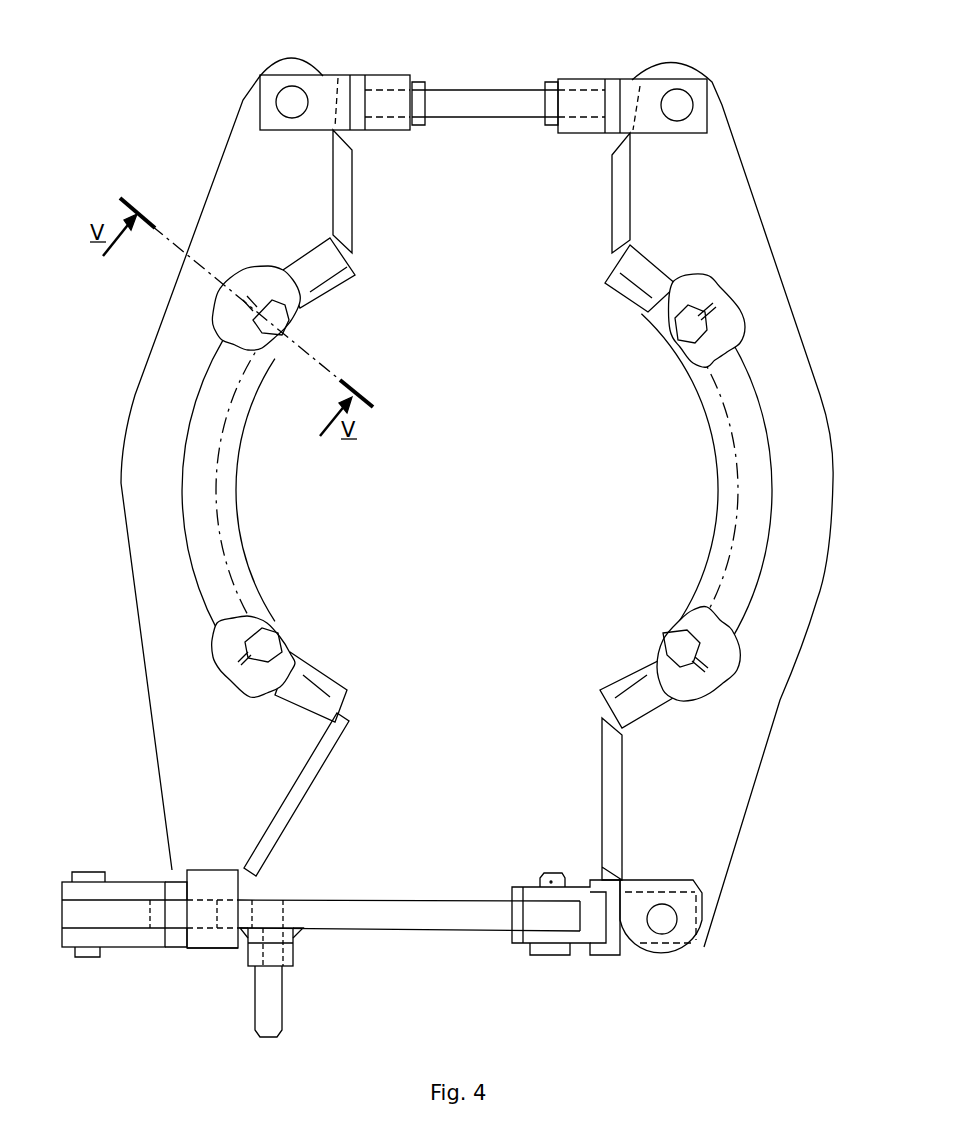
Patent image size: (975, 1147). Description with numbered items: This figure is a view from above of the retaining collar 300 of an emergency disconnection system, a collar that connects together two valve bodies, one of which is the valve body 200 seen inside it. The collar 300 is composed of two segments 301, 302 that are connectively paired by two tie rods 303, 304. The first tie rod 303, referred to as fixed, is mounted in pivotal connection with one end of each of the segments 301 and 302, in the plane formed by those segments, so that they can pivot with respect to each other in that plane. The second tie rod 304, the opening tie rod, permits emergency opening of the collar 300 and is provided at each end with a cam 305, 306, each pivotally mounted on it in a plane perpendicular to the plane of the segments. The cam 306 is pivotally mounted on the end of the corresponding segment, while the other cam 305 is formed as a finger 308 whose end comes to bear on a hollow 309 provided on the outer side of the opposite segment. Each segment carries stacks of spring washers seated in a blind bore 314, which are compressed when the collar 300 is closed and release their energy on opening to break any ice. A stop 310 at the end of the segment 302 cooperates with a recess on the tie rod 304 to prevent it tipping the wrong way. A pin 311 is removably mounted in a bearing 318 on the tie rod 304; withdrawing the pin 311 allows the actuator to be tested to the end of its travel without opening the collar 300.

The valve body 200 is at (710, 413).
The collar 300 is at (752, 72).
The segment 301 is at (752, 720).
The segment 302 is at (163, 720).
The fixed tie rod 303 is at (478, 88).
The opening tie rod 304 is at (425, 920).
The cam 305 is at (120, 890).
The cam 306 is at (602, 947).
The finger 308 is at (207, 920).
The hollow 309 is at (222, 907).
The stop 310 is at (197, 943).
The pin 311 is at (272, 997).
The blind bore 314 is at (282, 316).
The bearing 318 is at (288, 953).